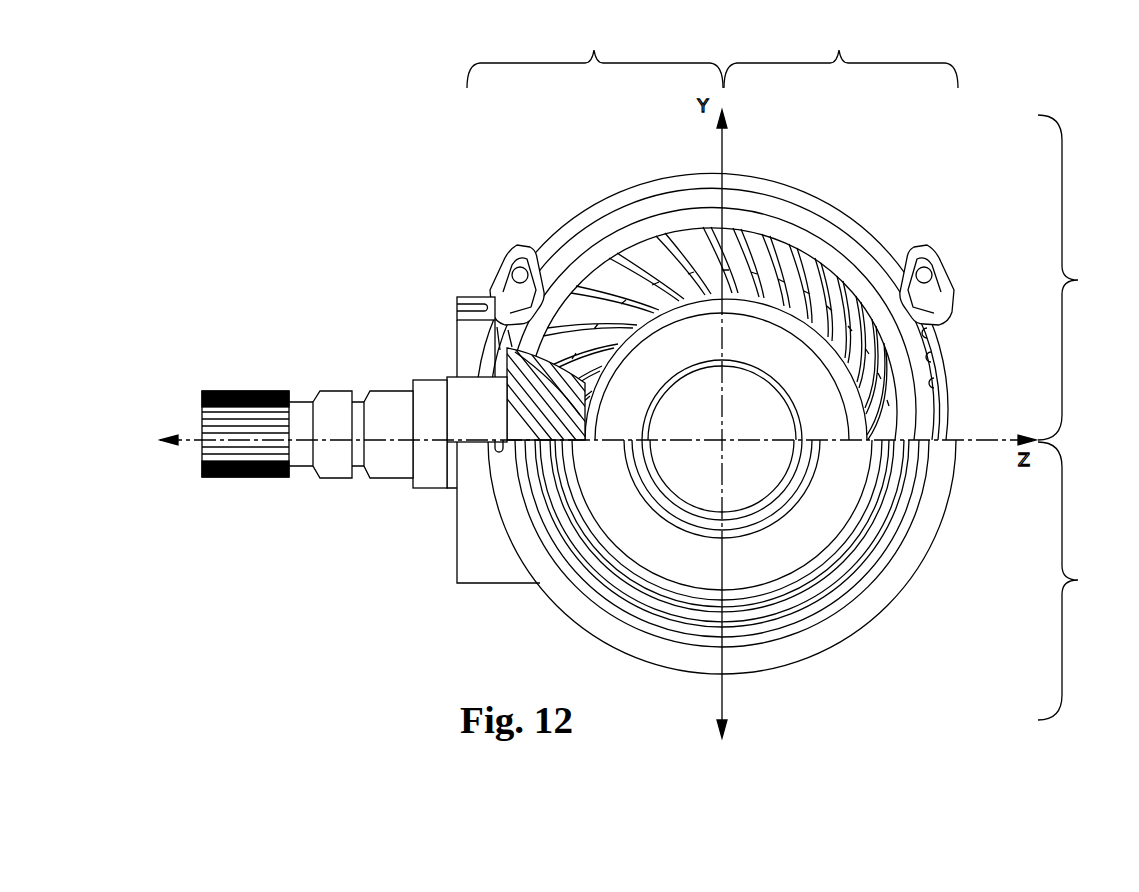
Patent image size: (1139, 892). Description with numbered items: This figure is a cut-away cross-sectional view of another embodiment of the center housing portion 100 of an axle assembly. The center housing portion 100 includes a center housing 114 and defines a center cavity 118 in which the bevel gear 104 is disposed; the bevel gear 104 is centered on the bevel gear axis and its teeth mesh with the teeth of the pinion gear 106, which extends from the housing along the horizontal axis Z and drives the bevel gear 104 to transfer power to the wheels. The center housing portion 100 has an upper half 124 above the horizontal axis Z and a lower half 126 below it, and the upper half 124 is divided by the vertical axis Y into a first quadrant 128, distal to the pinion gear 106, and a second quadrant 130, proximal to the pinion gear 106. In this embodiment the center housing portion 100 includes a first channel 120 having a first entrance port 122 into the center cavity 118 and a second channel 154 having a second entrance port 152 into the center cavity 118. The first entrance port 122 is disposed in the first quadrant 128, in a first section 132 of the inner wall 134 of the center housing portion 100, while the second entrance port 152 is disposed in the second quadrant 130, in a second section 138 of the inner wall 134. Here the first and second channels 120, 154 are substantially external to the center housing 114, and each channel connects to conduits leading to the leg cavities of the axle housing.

The center housing portion 100 is at (885, 212).
The bevel gear 104 is at (592, 320).
The pinion gear 106 is at (538, 370).
The center housing 114 is at (666, 185).
The center cavity 118 is at (946, 410).
The first channel 120 is at (845, 205).
The first entrance port 122 is at (935, 335).
The upper half 124 is at (1078, 277).
The lower half 126 is at (1078, 581).
The first quadrant 128 is at (841, 57).
The second quadrant 130 is at (595, 57).
The first section 132 is at (936, 358).
The inner wall 134 is at (940, 385).
The second section 138 is at (505, 335).
The second entrance port 152 is at (513, 340).
The second channel 154 is at (500, 268).